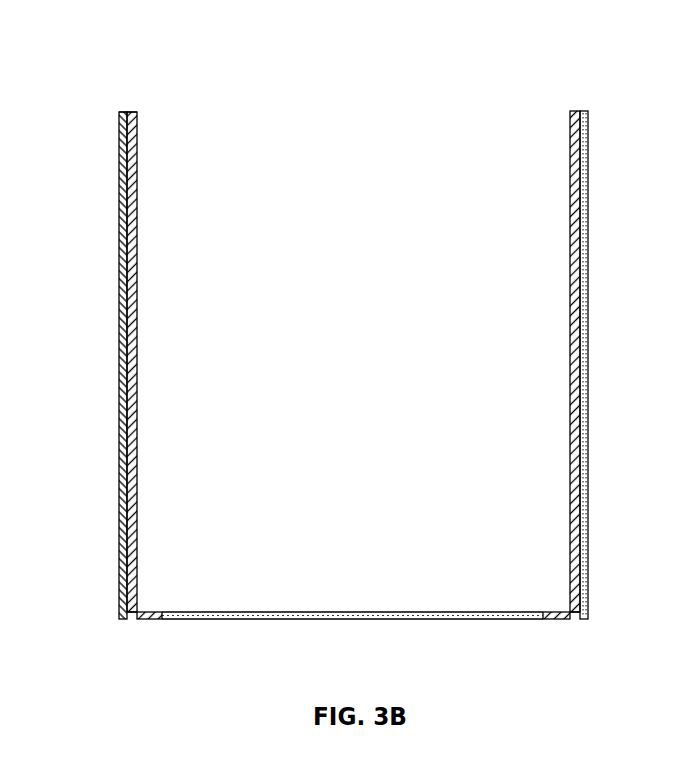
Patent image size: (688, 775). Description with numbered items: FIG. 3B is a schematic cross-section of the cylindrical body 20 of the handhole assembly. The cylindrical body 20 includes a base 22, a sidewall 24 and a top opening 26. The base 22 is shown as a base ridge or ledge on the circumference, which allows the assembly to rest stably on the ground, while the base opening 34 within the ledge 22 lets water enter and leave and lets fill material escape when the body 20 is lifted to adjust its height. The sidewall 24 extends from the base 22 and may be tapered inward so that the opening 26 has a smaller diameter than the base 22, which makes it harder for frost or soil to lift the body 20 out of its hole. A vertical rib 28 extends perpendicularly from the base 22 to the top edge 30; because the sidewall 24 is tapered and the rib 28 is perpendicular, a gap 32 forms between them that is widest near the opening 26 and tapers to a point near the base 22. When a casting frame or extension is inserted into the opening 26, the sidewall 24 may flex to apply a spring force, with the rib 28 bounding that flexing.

The cylindrical body 20 is at (67, 39).
The base 22 is at (146, 621).
The sidewall 24 is at (135, 156).
The opening 26 is at (498, 127).
The rib 28 is at (117, 188).
The top edge 30 is at (579, 110).
The gap 32 is at (123, 111).
The base opening 34 is at (212, 621).